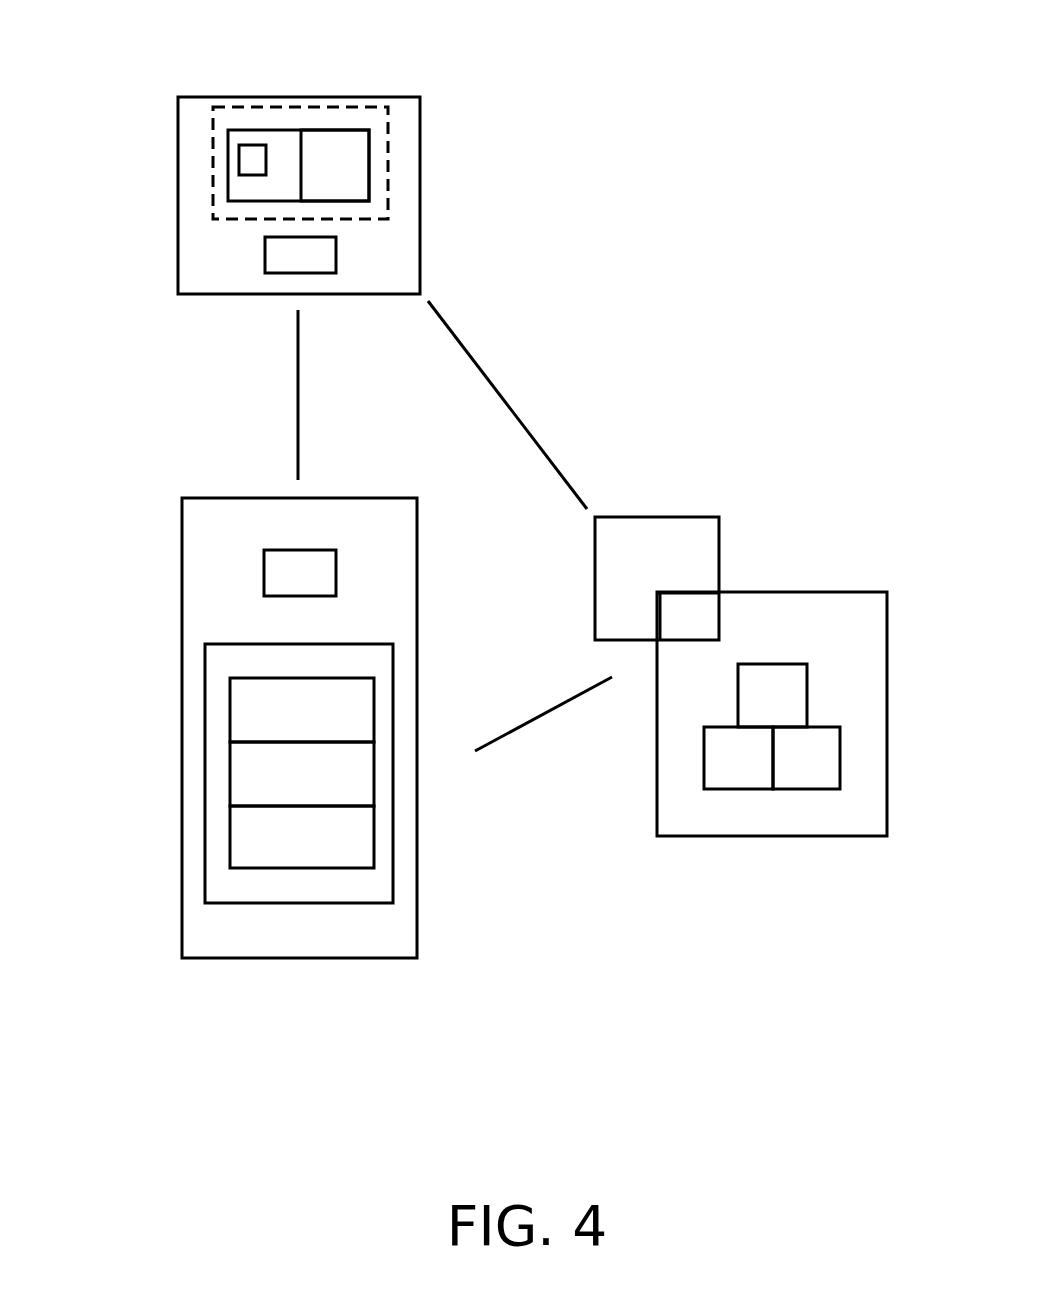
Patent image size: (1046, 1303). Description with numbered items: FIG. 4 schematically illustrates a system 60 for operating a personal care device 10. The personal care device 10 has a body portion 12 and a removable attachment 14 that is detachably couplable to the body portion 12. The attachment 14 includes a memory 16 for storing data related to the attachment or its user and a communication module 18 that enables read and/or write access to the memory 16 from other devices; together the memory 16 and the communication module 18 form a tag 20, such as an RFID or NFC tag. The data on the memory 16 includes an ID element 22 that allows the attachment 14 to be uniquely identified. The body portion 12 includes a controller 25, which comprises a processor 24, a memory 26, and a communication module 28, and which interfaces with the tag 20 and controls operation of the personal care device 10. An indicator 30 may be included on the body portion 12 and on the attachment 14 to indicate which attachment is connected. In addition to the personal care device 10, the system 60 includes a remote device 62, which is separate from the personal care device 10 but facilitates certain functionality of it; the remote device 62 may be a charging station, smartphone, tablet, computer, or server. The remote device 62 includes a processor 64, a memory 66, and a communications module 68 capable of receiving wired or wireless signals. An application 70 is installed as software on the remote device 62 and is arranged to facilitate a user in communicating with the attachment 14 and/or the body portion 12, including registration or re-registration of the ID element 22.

The personal care device 10 is at (95, 654).
The body portion 12 is at (385, 945).
The attachment 14 is at (166, 90).
The memory 16 is at (228, 188).
The communication module 18 is at (335, 130).
The tag 20 is at (388, 187).
The ID element 22 is at (248, 145).
The processor 24 is at (230, 720).
The controller 25 is at (243, 893).
The memory 26 is at (360, 780).
The communication module 28 is at (230, 845).
The indicator 30 is at (336, 253).
The system 60 is at (760, 225).
The remote device 62 is at (713, 863).
The processor 64 is at (780, 664).
The memory 66 is at (704, 758).
The communications module 68 is at (810, 789).
The application 70 is at (660, 517).